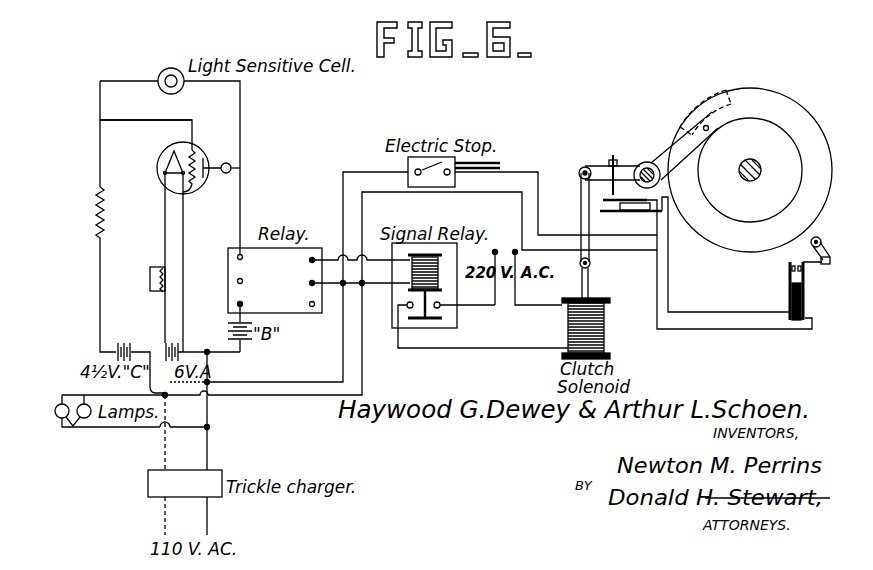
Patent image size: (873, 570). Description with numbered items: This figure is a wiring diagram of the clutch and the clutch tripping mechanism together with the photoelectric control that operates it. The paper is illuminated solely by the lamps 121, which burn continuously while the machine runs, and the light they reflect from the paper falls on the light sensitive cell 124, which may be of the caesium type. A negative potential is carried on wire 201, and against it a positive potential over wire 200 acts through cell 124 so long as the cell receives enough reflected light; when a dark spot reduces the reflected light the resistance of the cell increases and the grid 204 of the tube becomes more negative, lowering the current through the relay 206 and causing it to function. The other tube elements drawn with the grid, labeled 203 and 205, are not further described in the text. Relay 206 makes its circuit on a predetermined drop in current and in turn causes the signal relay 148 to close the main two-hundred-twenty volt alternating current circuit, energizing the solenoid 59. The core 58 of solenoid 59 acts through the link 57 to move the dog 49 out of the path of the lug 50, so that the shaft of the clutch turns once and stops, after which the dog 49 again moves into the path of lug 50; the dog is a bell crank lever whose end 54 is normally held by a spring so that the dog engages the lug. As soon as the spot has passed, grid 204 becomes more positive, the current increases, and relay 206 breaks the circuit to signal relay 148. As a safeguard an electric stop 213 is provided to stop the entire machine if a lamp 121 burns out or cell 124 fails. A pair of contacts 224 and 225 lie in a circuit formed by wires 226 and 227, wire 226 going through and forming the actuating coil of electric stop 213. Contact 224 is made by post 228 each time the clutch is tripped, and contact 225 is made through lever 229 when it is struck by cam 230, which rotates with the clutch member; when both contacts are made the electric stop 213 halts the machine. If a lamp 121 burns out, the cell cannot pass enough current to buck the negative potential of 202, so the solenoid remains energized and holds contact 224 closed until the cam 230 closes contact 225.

The light sensitive cell 124 is at (169, 68).
The wire 200 is at (241, 152).
The wire 201 is at (100, 164).
The negative potential 202 is at (175, 118).
The plate 203 is at (211, 165).
The grid 204 is at (188, 190).
The grid 205 is at (178, 152).
The relay 206 is at (275, 300).
The electric stop 213 is at (437, 166).
The wire 227 is at (262, 396).
The signal relay 148 is at (443, 283).
The wire 226 is at (265, 384).
The end of dog 54 is at (606, 158).
The post 228 is at (640, 161).
The link 57 is at (582, 210).
The contact 224 is at (652, 222).
The core 58 is at (588, 280).
The solenoid 59 is at (568, 330).
The dog 49 is at (704, 127).
The lug 50 is at (720, 118).
The cam 230 is at (737, 92).
The lever 229 is at (810, 252).
The contact 225 is at (790, 292).
The lamps 121 is at (131, 427).